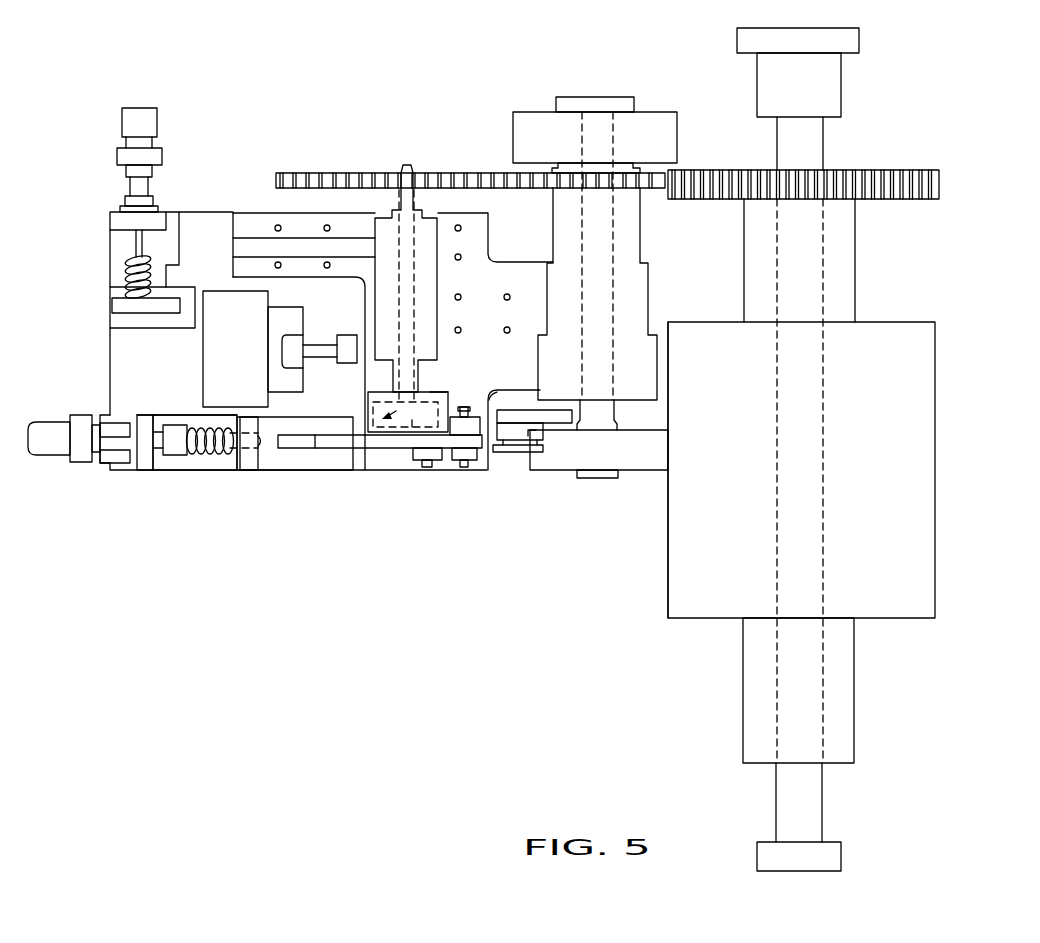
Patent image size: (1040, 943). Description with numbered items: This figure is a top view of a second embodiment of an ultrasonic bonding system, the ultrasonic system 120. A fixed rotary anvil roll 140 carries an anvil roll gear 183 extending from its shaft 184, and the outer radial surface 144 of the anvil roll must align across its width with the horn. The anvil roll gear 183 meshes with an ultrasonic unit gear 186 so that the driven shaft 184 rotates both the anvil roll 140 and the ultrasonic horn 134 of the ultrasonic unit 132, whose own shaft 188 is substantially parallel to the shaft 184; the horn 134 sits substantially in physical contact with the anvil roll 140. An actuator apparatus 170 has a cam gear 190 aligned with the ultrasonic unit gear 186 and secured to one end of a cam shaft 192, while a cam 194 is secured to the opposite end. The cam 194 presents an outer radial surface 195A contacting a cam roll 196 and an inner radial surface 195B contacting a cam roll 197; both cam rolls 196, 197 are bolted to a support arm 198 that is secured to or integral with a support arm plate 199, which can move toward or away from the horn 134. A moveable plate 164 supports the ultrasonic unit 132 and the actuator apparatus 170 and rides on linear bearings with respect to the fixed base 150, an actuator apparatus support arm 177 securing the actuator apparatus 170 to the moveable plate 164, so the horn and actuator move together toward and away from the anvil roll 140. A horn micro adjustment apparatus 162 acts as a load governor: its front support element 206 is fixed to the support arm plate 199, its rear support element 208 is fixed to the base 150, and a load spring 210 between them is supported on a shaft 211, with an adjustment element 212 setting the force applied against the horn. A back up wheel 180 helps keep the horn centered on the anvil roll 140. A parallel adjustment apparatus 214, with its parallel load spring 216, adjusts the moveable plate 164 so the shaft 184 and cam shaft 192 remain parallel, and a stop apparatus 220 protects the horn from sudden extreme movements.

The ultrasonic system 120 is at (580, 515).
The ultrasonic unit 132 is at (663, 101).
The ultrasonic horn 134 is at (640, 471).
The rotary anvil roll 140 is at (668, 550).
The outer radial surface 144 is at (948, 471).
The base 150 is at (109, 357).
The horn micro adjustment apparatus 162 is at (150, 480).
The moveable plate 164 is at (233, 227).
The actuator apparatus 170 is at (452, 244).
The actuator apparatus support arm 177 is at (305, 240).
The back up wheel 180 is at (517, 453).
The anvil roll gear 183 is at (900, 170).
The shaft 184 is at (826, 148).
The ultrasonic unit gear 186 is at (535, 171).
The shaft 188 is at (613, 313).
The cam gear 190 is at (311, 173).
The cam shaft 192 is at (414, 165).
The cam 194 is at (430, 392).
The outer radial surface 195A is at (470, 385).
The inner radial surface 195B is at (393, 432).
The cam roll 196 is at (497, 392).
The cam roll 197 is at (412, 432).
The support arm 198 is at (447, 453).
The support arm plate 199 is at (318, 415).
The front support element 206 is at (258, 455).
The rear support element 208 is at (130, 415).
The load spring 210 is at (212, 457).
The shaft 211 is at (233, 462).
The adjustment element 212 is at (173, 457).
The parallel adjustment apparatus 214 is at (170, 124).
The parallel load spring 216 is at (125, 270).
The stop apparatus 220 is at (203, 360).